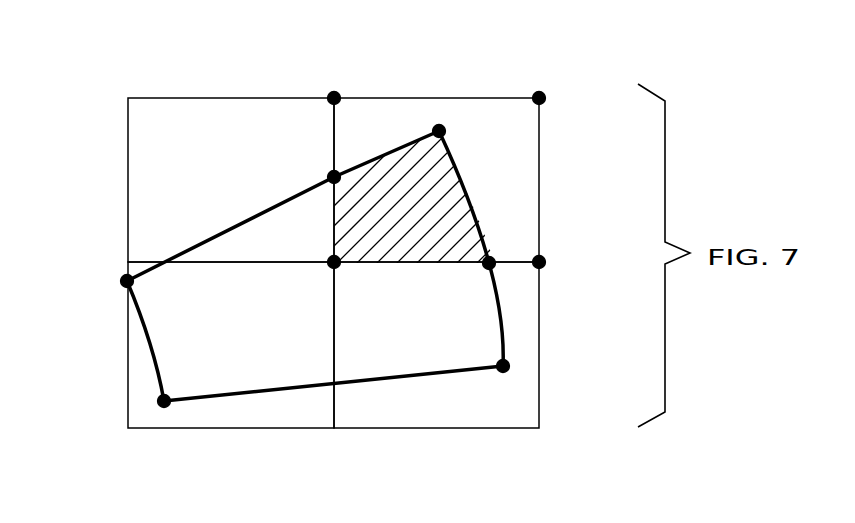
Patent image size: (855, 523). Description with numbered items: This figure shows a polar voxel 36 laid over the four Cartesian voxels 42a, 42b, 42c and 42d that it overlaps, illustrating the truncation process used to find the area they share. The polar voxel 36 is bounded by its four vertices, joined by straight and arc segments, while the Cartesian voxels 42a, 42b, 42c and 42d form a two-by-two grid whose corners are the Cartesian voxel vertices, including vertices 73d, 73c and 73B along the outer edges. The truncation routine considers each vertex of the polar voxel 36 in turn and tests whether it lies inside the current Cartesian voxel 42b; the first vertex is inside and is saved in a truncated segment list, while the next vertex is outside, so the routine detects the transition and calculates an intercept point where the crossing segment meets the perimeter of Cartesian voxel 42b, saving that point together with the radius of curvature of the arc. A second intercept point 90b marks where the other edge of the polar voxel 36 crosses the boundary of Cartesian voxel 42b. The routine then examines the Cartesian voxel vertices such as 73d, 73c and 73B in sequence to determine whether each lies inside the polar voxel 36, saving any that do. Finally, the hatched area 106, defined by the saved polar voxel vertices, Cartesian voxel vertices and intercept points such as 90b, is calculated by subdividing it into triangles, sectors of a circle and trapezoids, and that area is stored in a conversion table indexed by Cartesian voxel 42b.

The Cartesian voxel 42a is at (176, 128).
The Cartesian voxel 42b is at (392, 113).
The Cartesian voxel 42c is at (140, 406).
The Cartesian voxel 42d is at (408, 405).
The Cartesian voxel vertex 73d is at (334, 97).
The Cartesian voxel vertex 73c is at (546, 99).
The Cartesian voxel vertex 73B is at (545, 261).
The intercept point 90b is at (330, 176).
The area 106 is at (440, 250).
The polar voxel 36 is at (467, 325).